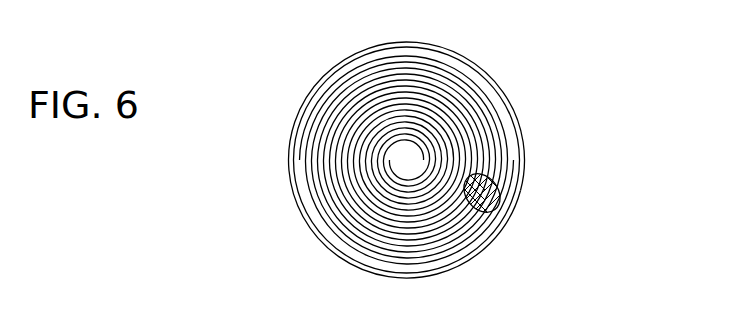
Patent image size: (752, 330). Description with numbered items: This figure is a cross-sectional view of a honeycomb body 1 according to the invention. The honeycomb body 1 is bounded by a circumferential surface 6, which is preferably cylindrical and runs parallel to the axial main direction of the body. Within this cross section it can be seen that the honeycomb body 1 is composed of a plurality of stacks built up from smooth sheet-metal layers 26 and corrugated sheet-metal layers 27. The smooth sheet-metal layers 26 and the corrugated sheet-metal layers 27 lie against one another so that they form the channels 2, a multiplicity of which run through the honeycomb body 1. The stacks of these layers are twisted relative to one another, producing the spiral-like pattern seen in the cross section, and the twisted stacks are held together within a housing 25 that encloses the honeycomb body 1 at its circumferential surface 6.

The honeycomb body 1 is at (510, 69).
The housing 25 is at (513, 107).
The circumferential surface 6 is at (525, 148).
The channels 2 is at (492, 185).
The smooth sheet-metal layers 26 is at (503, 213).
The corrugated sheet-metal layers 27 is at (483, 248).